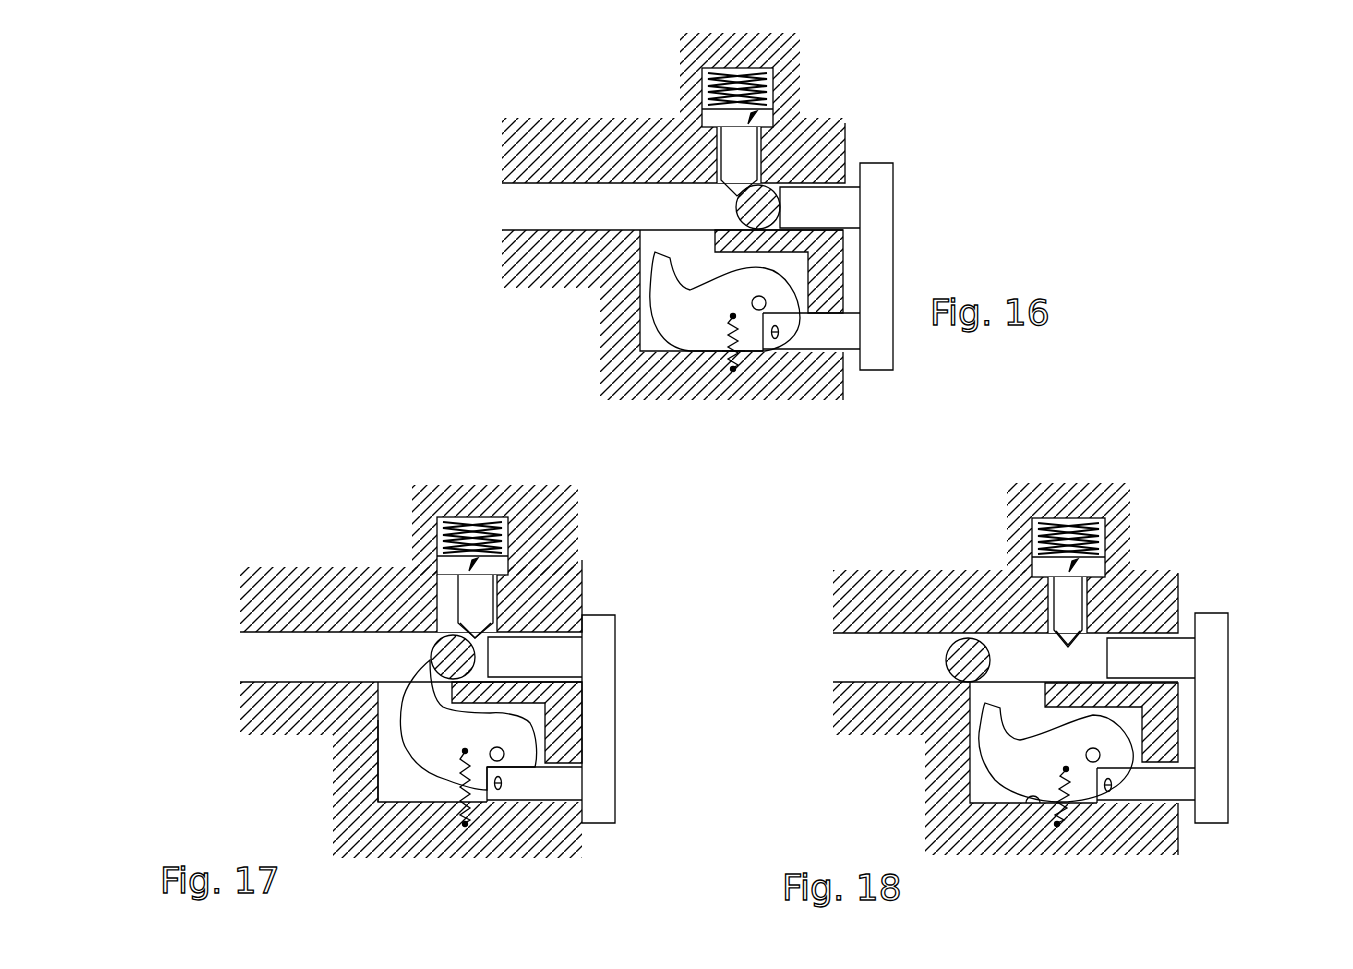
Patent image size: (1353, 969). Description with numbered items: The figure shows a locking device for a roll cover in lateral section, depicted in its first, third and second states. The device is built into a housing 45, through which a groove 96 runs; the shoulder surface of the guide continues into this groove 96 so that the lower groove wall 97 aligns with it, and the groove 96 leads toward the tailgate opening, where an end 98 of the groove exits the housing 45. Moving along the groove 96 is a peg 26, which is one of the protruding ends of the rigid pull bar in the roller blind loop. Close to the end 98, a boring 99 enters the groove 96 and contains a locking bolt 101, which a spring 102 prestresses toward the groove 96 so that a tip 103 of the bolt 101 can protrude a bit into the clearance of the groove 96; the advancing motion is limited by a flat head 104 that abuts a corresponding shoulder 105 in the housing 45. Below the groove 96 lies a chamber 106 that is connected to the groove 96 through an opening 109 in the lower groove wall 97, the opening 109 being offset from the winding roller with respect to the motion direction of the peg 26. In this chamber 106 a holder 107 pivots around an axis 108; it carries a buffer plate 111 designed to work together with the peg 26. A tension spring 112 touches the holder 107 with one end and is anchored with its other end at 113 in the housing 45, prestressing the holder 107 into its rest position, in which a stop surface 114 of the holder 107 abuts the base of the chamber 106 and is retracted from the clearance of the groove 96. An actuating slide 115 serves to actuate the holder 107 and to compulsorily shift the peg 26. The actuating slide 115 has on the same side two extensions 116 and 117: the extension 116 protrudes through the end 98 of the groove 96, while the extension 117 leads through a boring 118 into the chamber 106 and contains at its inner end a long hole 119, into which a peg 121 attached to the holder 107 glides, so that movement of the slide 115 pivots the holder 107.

In FIG. 16, the peg 26 is at (778, 190).
In FIG. 17, the peg 26 is at (432, 652).
In FIG. 18, the peg 26 is at (960, 640).
In FIG. 16, the housing 45 is at (740, 75).
In FIG. 17, the housing 45 is at (345, 546).
In FIG. 18, the housing 45 is at (1068, 528).
In FIG. 16, the groove 96 is at (566, 201).
In FIG. 17, the groove 96 is at (300, 651).
In FIG. 18, the groove 96 is at (879, 664).
In FIG. 16, the lower groove wall 97 is at (527, 232).
In FIG. 17, the lower groove wall 97 is at (276, 682).
In FIG. 18, the lower groove wall 97 is at (891, 682).
In FIG. 17, the end of the groove 98 is at (582, 622).
In FIG. 17, the boring 99 is at (548, 600).
In FIG. 16, the locking bolt 101 is at (756, 117).
In FIG. 17, the locking bolt 101 is at (429, 524).
In FIG. 18, the locking bolt 101 is at (1162, 556).
In FIG. 16, the spring 102 is at (713, 84).
In FIG. 17, the spring 102 is at (518, 508).
In FIG. 18, the spring 102 is at (1083, 525).
In FIG. 17, the tip 103 is at (457, 612).
In FIG. 18, the tip 103 is at (1107, 580).
In FIG. 17, the flat head 104 is at (512, 585).
In FIG. 17, the shoulder 105 is at (455, 598).
In FIG. 17, the chamber 106 is at (404, 789).
In FIG. 16, the holder 107 is at (725, 301).
In FIG. 17, the holder 107 is at (512, 780).
In FIG. 18, the holder 107 is at (1056, 752).
In FIG. 16, the axis 108 is at (759, 303).
In FIG. 17, the axis 108 is at (504, 762).
In FIG. 18, the axis 108 is at (1093, 755).
In FIG. 17, the opening 109 is at (393, 698).
In FIG. 16, the buffer plate 111 is at (638, 282).
In FIG. 17, the buffer plate 111 is at (378, 777).
In FIG. 18, the buffer plate 111 is at (970, 737).
In FIG. 16, the tension spring 112 is at (728, 352).
In FIG. 17, the tension spring 112 is at (486, 836).
In FIG. 18, the tension spring 112 is at (1070, 807).
In FIG. 17, the anchor point 113 is at (465, 826).
In FIG. 18, the stop surface 114 is at (1028, 798).
In FIG. 16, the actuating slide 115 is at (917, 244).
In FIG. 17, the actuating slide 115 is at (614, 704).
In FIG. 18, the actuating slide 115 is at (1226, 693).
In FIG. 16, the extension 116 is at (826, 208).
In FIG. 17, the extension 116 is at (537, 663).
In FIG. 18, the extension 116 is at (1150, 657).
In FIG. 16, the extension 117 is at (820, 332).
In FIG. 17, the extension 117 is at (550, 788).
In FIG. 18, the extension 117 is at (1157, 783).
In FIG. 16, the boring 118 is at (777, 345).
In FIG. 16, the long hole 119 is at (776, 345).
In FIG. 17, the long hole 119 is at (505, 788).
In FIG. 16, the peg 121 is at (732, 372).
In FIG. 18, the peg 121 is at (1115, 792).